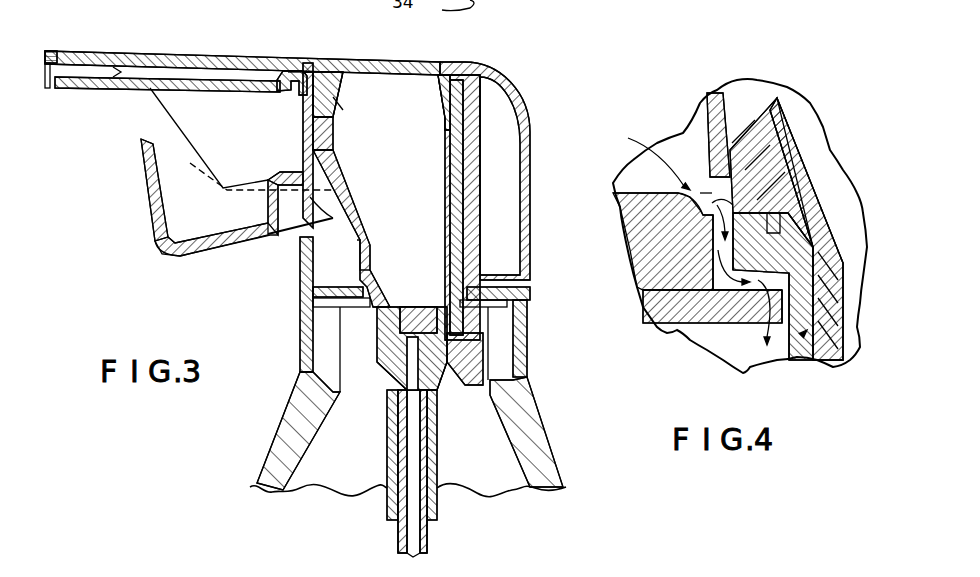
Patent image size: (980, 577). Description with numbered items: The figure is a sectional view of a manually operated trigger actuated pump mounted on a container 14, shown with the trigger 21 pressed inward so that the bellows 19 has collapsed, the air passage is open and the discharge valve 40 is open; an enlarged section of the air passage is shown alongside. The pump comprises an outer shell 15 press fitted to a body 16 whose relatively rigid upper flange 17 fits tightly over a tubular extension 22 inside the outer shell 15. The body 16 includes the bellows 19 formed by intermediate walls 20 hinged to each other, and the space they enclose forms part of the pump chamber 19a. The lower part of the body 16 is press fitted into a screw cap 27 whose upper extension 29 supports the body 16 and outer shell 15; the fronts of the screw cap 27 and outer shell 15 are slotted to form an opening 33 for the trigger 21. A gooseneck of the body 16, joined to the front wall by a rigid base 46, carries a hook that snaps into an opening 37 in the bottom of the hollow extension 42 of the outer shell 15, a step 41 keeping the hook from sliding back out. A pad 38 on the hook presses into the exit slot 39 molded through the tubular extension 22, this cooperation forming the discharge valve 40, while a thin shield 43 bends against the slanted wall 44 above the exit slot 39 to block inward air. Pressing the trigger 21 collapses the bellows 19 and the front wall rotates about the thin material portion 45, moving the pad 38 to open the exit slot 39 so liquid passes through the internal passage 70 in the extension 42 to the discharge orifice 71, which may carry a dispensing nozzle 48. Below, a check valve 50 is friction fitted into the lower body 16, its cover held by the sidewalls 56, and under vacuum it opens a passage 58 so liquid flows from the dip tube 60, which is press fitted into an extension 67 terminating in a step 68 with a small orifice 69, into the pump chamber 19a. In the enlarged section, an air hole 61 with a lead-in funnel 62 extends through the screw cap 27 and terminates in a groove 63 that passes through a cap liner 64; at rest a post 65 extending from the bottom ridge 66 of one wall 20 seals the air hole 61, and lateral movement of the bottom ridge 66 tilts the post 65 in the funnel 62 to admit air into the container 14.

In FIG. 3, the container 14 is at (535, 450).
In FIG. 3, the outer shell 15 is at (524, 80).
In FIG. 3, the body 16 is at (445, 256).
In FIG. 3, the upper flange 17 is at (333, 98).
In FIG. 3, the bellows 19 is at (380, 248).
In FIG. 4, the bellows 19 is at (817, 190).
In FIG. 3, the pump chamber 19a is at (374, 150).
In FIG. 4, the intermediate walls 20 is at (723, 100).
In FIG. 3, the trigger 21 is at (185, 258).
In FIG. 3, the tubular extension 22 is at (436, 92).
In FIG. 3, the screw cap 27 is at (300, 262).
In FIG. 4, the screw cap 27 is at (636, 258).
In FIG. 3, the extension 29 is at (472, 190).
In FIG. 3, the opening 33 is at (290, 241).
In FIG. 3, the opening 37 is at (290, 97).
In FIG. 3, the pad 38 is at (327, 71).
In FIG. 3, the exit slot 39 is at (343, 73).
In FIG. 3, the discharge valve 40 is at (294, 115).
In FIG. 3, the step 41 is at (288, 71).
In FIG. 3, the extension 42 is at (185, 57).
In FIG. 3, the shield 43 is at (304, 70).
In FIG. 3, the slanted wall 44 is at (315, 72).
In FIG. 3, the thin material portion 45 is at (342, 153).
In FIG. 3, the rigid base 46 is at (337, 215).
In FIG. 3, the dispensing nozzle 48 is at (80, 85).
In FIG. 3, the check valve 50 is at (391, 367).
In FIG. 3, the sidewalls 56 is at (377, 357).
In FIG. 3, the passage 58 is at (414, 360).
In FIG. 3, the dip tube 60 is at (405, 523).
In FIG. 4, the air hole 61 is at (720, 285).
In FIG. 4, the lead-in funnel 62 is at (647, 159).
In FIG. 4, the groove 63 is at (760, 286).
In FIG. 4, the cap liner 64 is at (684, 302).
In FIG. 4, the post 65 is at (705, 193).
In FIG. 4, the bottom ridge 66 is at (762, 135).
In FIG. 3, the extension 67 is at (437, 470).
In FIG. 3, the step 68 is at (401, 390).
In FIG. 3, the orifice 69 is at (409, 395).
In FIG. 3, the internal passage 70 is at (121, 72).
In FIG. 3, the discharge orifice 71 is at (47, 55).